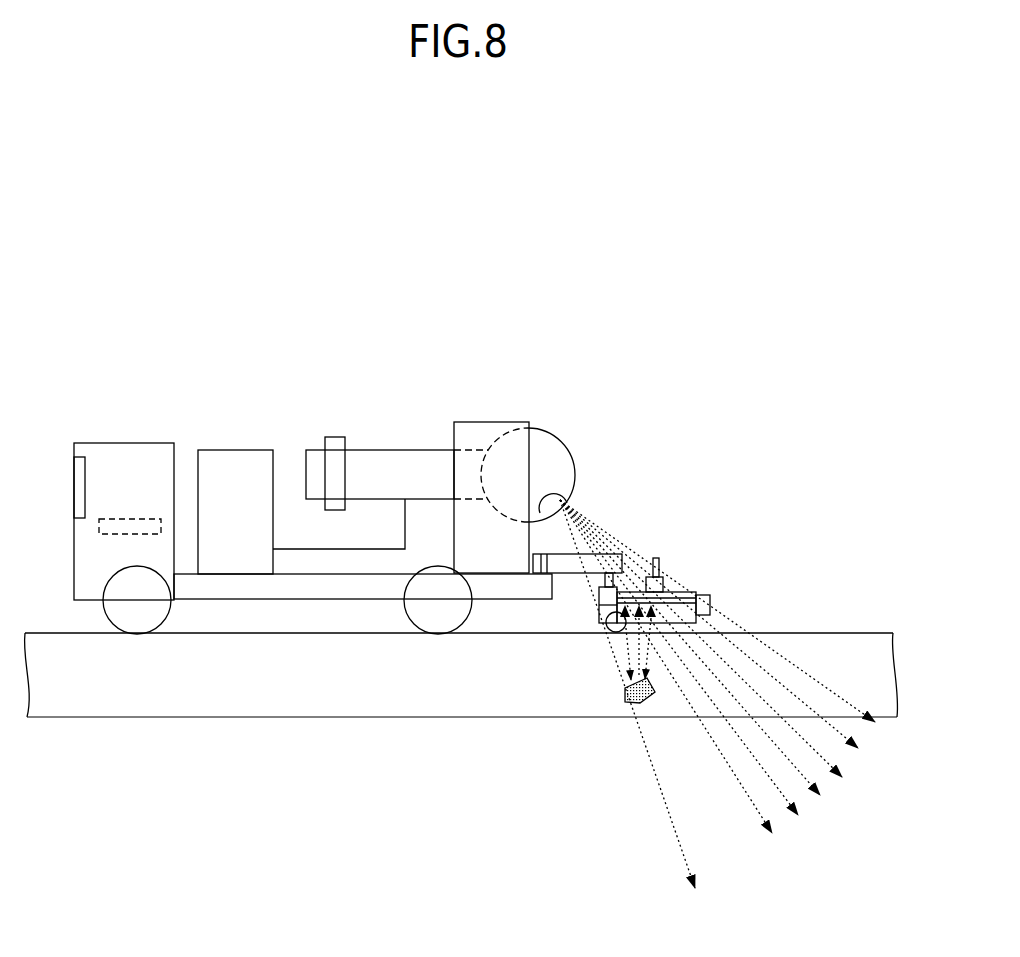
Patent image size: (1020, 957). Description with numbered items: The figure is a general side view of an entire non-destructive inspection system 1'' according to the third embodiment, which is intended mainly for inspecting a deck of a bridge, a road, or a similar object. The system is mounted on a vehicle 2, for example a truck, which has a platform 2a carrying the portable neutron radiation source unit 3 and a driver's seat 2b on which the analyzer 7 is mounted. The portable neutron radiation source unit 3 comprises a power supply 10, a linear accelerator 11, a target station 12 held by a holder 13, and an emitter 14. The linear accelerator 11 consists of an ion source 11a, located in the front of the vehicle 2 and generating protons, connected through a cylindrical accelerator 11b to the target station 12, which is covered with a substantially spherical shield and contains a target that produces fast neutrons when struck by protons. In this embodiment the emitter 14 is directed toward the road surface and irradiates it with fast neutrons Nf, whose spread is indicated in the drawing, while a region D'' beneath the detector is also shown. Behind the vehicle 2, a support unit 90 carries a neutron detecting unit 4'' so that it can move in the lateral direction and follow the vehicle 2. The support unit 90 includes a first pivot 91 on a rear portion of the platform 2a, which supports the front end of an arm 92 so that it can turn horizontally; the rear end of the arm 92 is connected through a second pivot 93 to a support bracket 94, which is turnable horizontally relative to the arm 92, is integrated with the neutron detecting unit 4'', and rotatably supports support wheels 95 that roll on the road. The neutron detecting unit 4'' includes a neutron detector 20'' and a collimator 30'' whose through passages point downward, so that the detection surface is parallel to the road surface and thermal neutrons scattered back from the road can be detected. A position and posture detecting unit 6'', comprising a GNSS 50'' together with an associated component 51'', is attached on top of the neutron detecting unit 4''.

The non-destructive inspection system 1'' is at (265, 302).
The vehicle 2 is at (158, 383).
The platform 2a is at (286, 598).
The driver's seat 2b is at (133, 443).
The portable neutron radiation source unit 3 is at (448, 372).
The neutron detecting unit 4'' is at (712, 616).
The position and posture detecting unit 6'' is at (709, 547).
The analyzer 7 is at (138, 519).
The power supply 10 is at (245, 450).
The linear accelerator 11 is at (405, 373).
The ion source 11a is at (332, 437).
The accelerator 11b is at (380, 450).
The target station 12 is at (556, 437).
The holder 13 is at (492, 422).
The emitter 14 is at (562, 500).
The neutron detector 20'' is at (694, 621).
The collimator 30'' is at (733, 599).
The GNSS 50'' is at (694, 543).
The light source holder 51'' is at (691, 564).
The support unit 90 is at (610, 760).
The first pivot 91 is at (538, 573).
The arm 92 is at (568, 573).
The second pivot 93 is at (605, 580).
The support bracket 94 is at (599, 603).
The support wheels 95 is at (609, 630).
The detection region D'' is at (637, 771).
The fast neutrons Nf is at (889, 717).